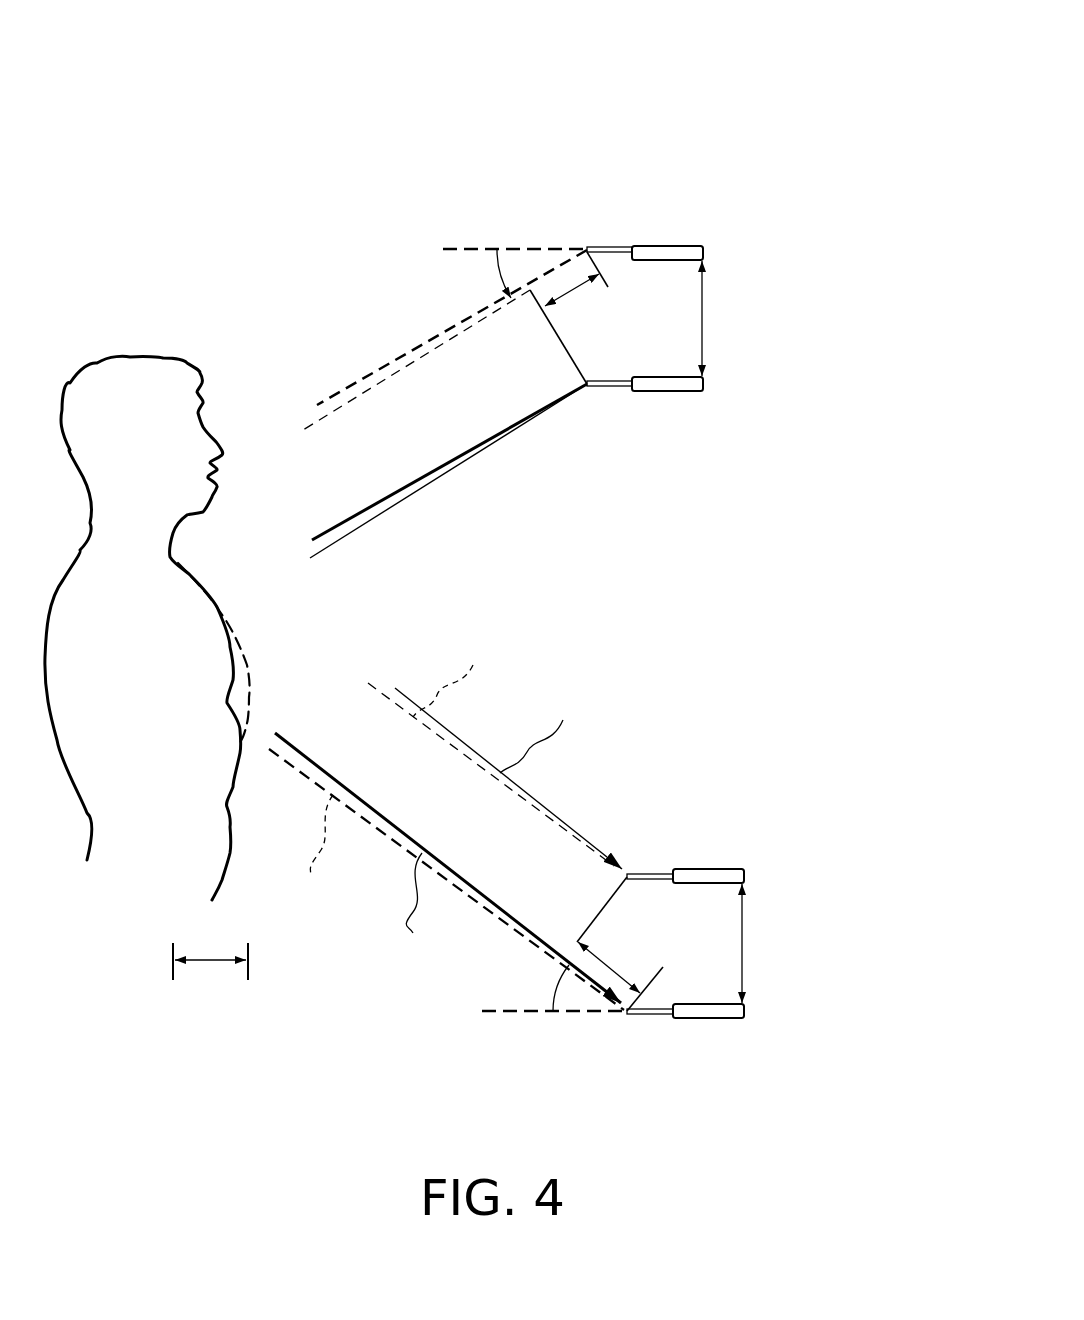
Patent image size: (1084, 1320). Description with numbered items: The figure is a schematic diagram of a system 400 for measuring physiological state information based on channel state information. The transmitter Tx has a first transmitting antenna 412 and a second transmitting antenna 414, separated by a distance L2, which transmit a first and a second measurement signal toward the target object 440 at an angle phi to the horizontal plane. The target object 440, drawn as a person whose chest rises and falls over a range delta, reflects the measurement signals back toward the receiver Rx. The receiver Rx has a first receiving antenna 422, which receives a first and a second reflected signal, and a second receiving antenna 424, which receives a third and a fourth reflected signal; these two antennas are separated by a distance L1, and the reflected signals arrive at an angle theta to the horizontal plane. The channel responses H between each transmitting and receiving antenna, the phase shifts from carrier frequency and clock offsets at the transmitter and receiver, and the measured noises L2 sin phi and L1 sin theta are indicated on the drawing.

The system for measuring physiological state information 400 is at (814, 95).
The first transmitting antenna 412 is at (665, 244).
The second transmitting antenna 414 is at (668, 394).
The first receiving antenna 422 is at (705, 866).
The second receiving antenna 424 is at (707, 1020).
The target object 440 is at (131, 352).